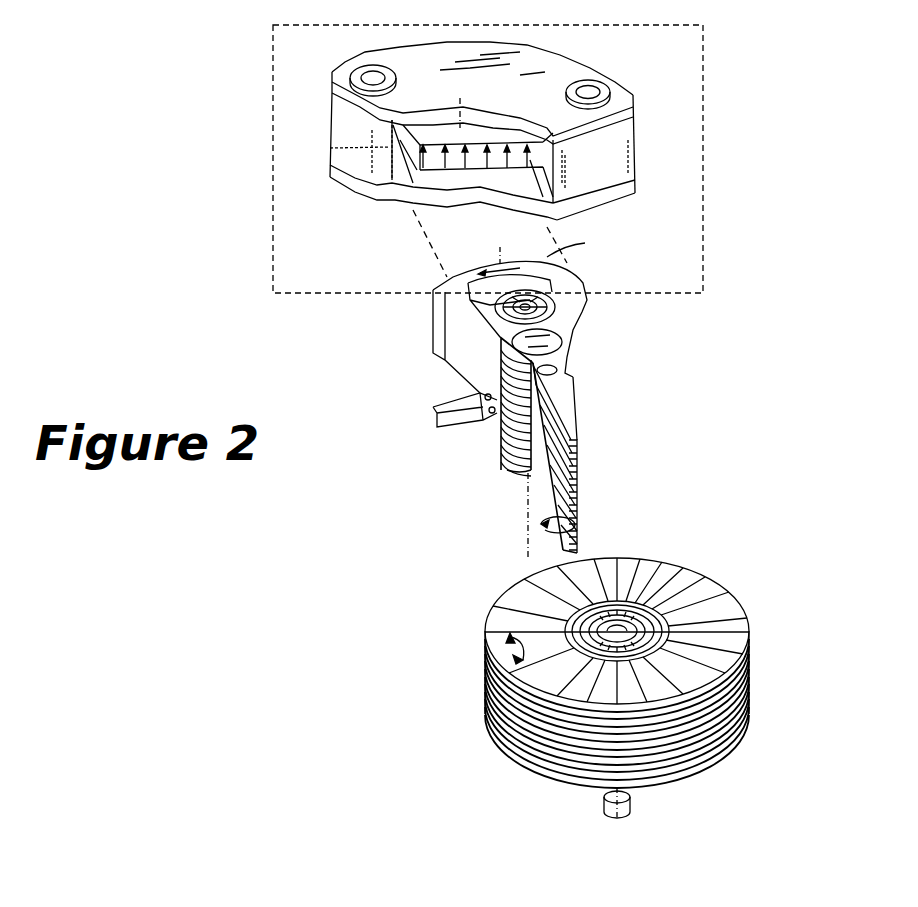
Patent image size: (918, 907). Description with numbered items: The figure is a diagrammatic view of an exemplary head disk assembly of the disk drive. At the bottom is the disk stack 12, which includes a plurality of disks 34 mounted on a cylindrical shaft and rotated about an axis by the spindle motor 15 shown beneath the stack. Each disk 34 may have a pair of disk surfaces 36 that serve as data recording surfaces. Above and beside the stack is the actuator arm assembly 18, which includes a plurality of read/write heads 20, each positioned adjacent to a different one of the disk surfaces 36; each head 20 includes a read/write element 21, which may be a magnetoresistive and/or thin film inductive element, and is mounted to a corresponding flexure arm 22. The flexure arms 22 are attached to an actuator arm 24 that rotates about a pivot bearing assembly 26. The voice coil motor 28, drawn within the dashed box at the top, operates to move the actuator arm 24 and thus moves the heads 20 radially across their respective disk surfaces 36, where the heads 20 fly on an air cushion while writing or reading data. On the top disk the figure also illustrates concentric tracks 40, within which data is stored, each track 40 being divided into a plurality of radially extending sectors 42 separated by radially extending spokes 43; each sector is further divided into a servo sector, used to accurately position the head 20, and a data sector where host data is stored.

The disk stack 12 is at (500, 567).
The spindle motor 15 is at (603, 800).
The actuator arm assembly 18 is at (619, 393).
The read/write head 20 is at (573, 450).
The read/write element 21 is at (577, 448).
The flexure arm 22 is at (570, 415).
The actuator arm 24 is at (572, 352).
The pivot bearing assembly 26 is at (547, 308).
The voice coil motor 28 is at (703, 147).
The disks 34 is at (656, 765).
The disk surfaces 36 is at (733, 640).
The tracks 40 is at (629, 558).
The sectors 42 is at (507, 650).
The spokes 43 is at (523, 623).